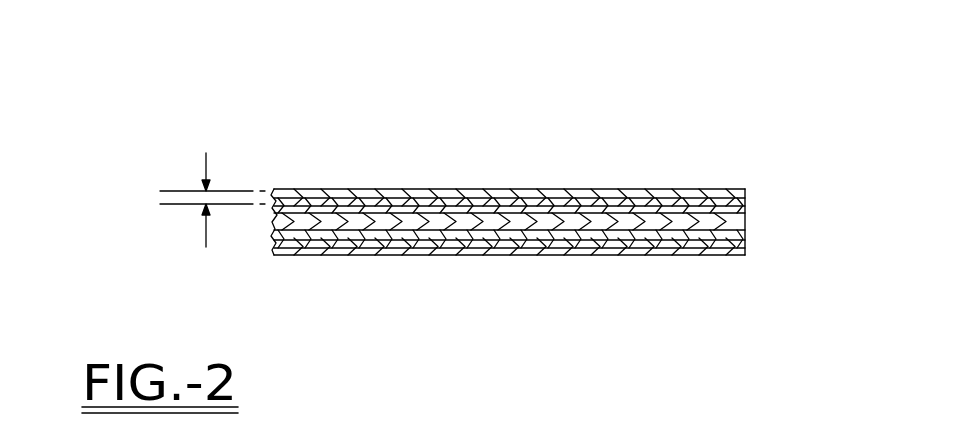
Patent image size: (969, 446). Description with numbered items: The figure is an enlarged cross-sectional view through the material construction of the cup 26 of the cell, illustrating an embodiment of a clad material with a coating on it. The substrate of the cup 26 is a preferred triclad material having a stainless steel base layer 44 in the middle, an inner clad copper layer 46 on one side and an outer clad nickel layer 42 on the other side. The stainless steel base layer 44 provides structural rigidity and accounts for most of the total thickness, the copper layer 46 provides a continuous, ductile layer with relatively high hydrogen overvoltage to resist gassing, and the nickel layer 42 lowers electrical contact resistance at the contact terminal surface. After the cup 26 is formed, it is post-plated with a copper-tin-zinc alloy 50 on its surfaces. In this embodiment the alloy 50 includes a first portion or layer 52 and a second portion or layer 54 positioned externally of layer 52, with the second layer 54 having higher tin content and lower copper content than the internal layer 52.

The cup 26 is at (510, 183).
The outer clad nickel layer 42 is at (746, 203).
The stainless steel base layer 44 is at (746, 222).
The inner clad copper layer 46 is at (746, 232).
The copper-tin-zinc alloy 50 is at (160, 193).
The first portion or layer 52 is at (341, 189).
The second portion or layer 54 is at (397, 189).